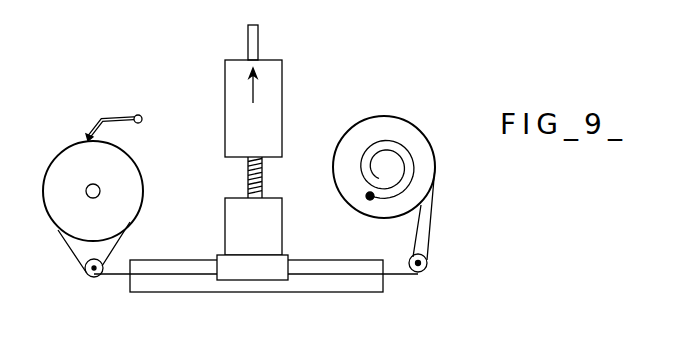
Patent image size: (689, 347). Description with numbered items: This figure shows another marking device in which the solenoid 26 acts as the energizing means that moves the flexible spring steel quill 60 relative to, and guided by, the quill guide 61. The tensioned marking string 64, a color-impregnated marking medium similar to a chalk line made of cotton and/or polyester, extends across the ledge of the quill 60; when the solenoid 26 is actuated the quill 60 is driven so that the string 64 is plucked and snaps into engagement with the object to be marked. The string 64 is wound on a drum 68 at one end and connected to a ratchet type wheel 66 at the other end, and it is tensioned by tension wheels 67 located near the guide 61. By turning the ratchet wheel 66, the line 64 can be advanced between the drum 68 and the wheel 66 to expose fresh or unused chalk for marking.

The solenoid 26 is at (283, 82).
The flexible spring steel quill 60 is at (230, 215).
The quill guide 61 is at (250, 276).
The tensioned marking string 64 is at (112, 276).
The ratchet type wheel 66 is at (133, 162).
The tension wheels 67 is at (103, 262).
The drum 68 is at (371, 117).